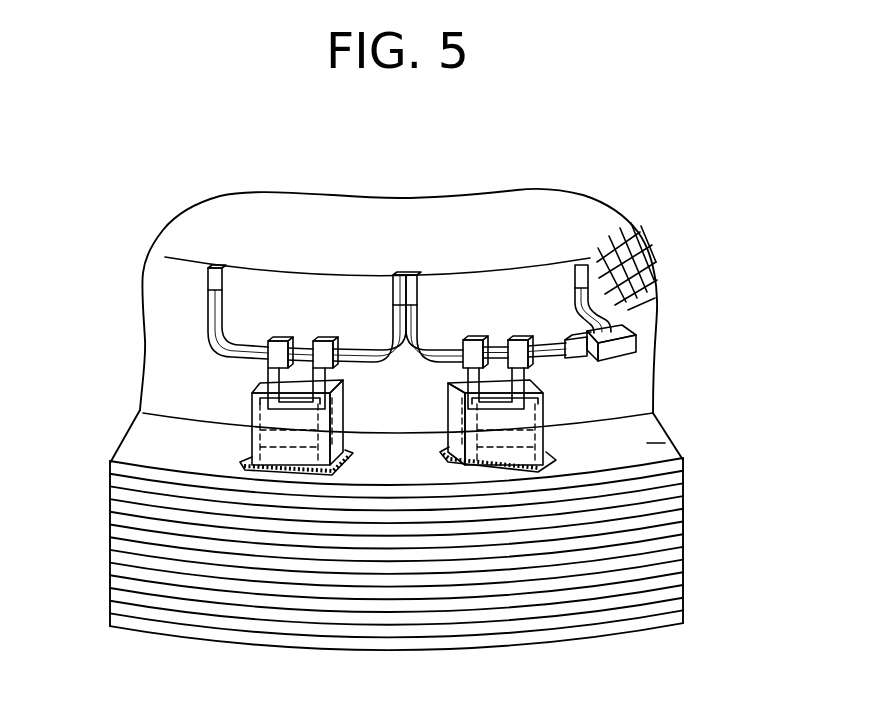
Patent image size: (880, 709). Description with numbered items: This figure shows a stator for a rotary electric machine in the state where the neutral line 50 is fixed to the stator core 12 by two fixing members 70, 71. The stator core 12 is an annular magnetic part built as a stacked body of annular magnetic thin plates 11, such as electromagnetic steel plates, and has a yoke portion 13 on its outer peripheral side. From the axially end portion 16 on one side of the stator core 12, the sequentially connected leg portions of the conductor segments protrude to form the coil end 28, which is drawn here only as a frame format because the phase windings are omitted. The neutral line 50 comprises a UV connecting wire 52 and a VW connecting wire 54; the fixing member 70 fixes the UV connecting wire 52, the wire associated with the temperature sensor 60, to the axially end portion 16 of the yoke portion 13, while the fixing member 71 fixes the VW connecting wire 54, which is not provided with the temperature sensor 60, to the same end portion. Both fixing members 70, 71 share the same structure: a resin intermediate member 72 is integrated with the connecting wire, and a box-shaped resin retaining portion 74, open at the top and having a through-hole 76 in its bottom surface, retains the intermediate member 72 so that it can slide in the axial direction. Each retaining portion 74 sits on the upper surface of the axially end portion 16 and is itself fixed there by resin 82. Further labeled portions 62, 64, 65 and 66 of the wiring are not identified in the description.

The magnetic thin plates 11 is at (120, 533).
The stator core 12 is at (673, 518).
The yoke portion 13 is at (138, 442).
The axially end portion 16 is at (655, 440).
The coil end 28 is at (584, 212).
The neutral line 50 is at (203, 315).
The UV connecting wire 52 is at (550, 354).
The VW connecting wire 54 is at (244, 350).
The temperature sensor 60 is at (609, 350).
The terminal 62 is at (586, 287).
The terminal 64 is at (418, 296).
The terminal 65 is at (392, 296).
The terminal 66 is at (210, 283).
The fixing member 70 is at (441, 418).
The fixing member 71 is at (244, 406).
The intermediate member 72 is at (333, 371).
The intermediate member retaining portion 74 is at (350, 458).
The through-hole 76 is at (299, 445).
The resin 82 is at (241, 462).